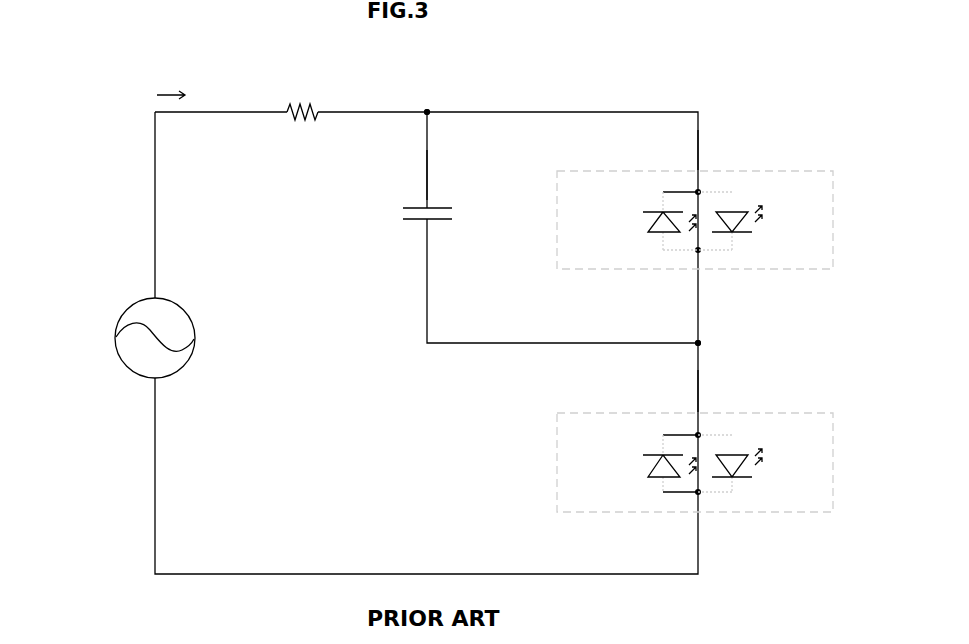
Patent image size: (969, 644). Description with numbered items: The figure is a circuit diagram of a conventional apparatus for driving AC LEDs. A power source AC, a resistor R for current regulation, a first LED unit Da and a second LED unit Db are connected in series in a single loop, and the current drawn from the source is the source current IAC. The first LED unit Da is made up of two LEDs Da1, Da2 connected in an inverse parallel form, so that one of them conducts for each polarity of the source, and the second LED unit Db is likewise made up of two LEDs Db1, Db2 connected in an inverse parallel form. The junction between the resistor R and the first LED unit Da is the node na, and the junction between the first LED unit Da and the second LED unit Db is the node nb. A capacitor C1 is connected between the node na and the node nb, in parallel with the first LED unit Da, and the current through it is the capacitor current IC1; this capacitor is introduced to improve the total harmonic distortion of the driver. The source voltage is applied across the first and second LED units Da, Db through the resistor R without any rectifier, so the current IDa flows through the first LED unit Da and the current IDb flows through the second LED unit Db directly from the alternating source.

The power source AC is at (116, 337).
The current applied from the source power IAC is at (190, 94).
The resistor R is at (302, 131).
The junction of the resistor and the first LED unit na is at (422, 97).
The junction of the first and second LED units nb is at (721, 342).
The capacitor C1 is at (409, 215).
The capacitor current IC1 is at (450, 177).
The first LED unit Da is at (695, 158).
The LED Da1 is at (644, 224).
The LED Da2 is at (763, 222).
The current flowing through the first LED unit IDa is at (723, 150).
The second LED unit Db is at (695, 401).
The LED Db1 is at (644, 467).
The LED Db2 is at (763, 465).
The current flowing through the second LED unit IDb is at (723, 391).